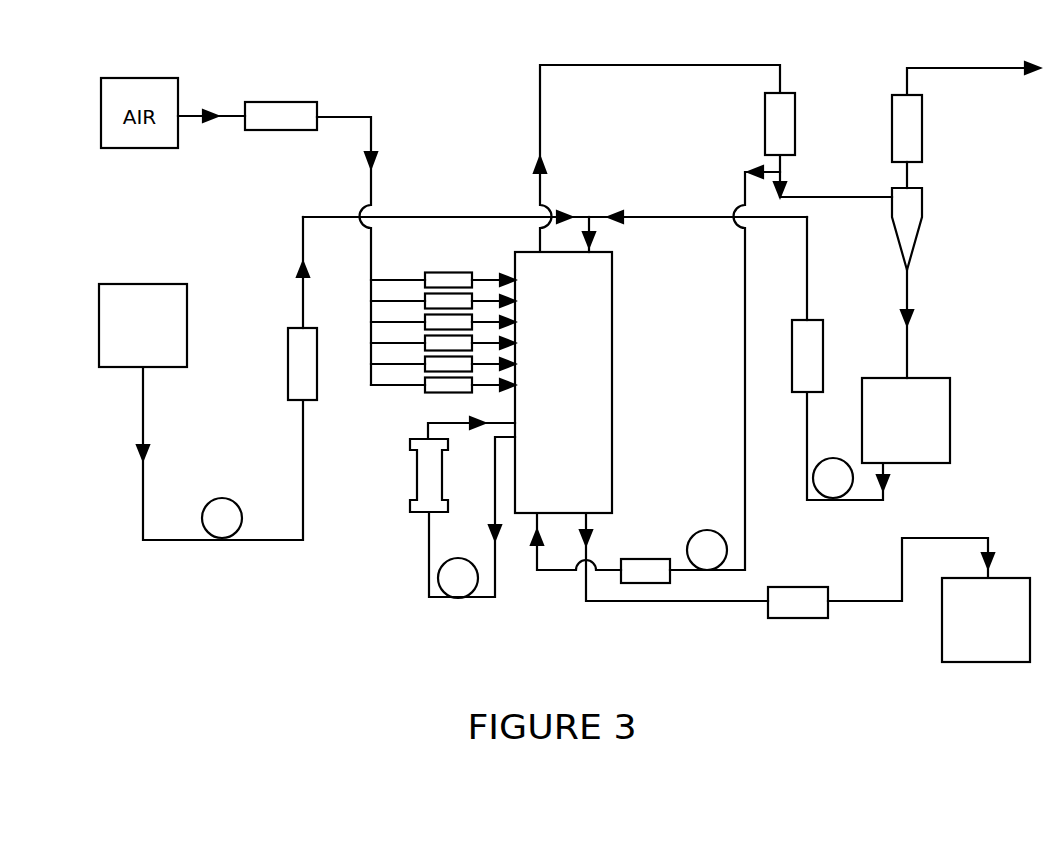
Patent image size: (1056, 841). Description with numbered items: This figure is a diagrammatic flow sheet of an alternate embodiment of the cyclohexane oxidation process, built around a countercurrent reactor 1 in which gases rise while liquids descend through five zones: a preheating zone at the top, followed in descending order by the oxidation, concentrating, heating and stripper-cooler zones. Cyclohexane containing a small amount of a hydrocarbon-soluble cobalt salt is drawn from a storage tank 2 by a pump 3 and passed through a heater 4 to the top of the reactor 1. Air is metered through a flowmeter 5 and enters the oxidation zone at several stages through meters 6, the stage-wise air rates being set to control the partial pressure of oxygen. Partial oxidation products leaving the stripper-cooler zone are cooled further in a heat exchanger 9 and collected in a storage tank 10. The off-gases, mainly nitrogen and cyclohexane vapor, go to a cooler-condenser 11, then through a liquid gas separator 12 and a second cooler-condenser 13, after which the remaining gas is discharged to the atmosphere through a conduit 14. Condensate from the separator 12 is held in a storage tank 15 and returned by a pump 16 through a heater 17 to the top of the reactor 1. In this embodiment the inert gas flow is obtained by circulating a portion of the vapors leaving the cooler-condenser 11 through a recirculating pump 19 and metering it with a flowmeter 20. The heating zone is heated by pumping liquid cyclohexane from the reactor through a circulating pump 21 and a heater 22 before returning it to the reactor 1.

The reactor 1 is at (590, 345).
The storage tank 2 is at (165, 330).
The pump 3 is at (220, 513).
The heater 4 is at (298, 357).
The flowmeter 5 is at (284, 113).
The meters 6 is at (458, 322).
The heat exchanger 9 is at (797, 602).
The storage tank 10 is at (955, 633).
The cooler-condenser 11 is at (782, 112).
The liquid gas separator 12 is at (910, 212).
The second cooler-condenser 13 is at (910, 122).
The conduit 14 is at (973, 63).
The storage tank 15 is at (935, 427).
The pump 16 is at (833, 478).
The heater 17 is at (808, 335).
The recirculating pump 19 is at (700, 545).
The flowmeter 20 is at (637, 568).
The circulating pump 21 is at (455, 580).
The heater 22 is at (420, 470).